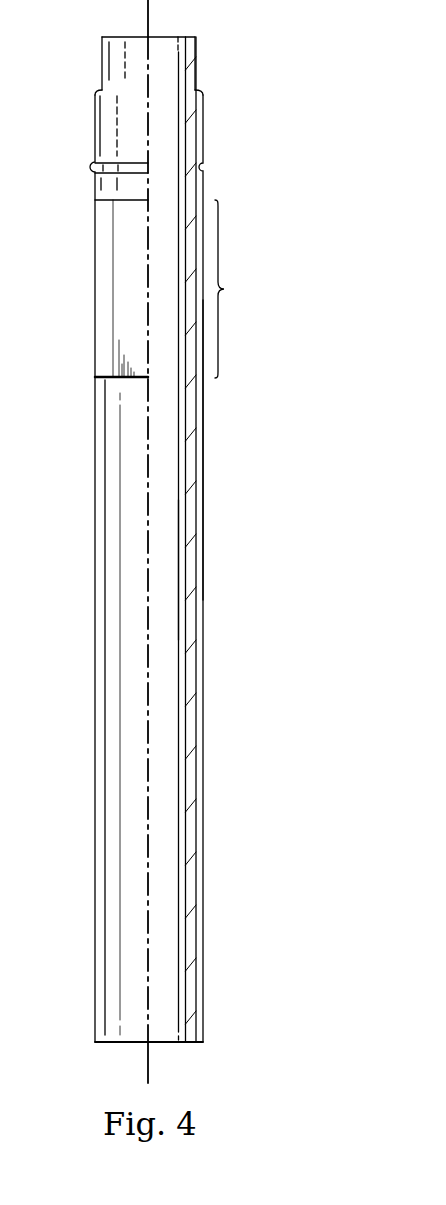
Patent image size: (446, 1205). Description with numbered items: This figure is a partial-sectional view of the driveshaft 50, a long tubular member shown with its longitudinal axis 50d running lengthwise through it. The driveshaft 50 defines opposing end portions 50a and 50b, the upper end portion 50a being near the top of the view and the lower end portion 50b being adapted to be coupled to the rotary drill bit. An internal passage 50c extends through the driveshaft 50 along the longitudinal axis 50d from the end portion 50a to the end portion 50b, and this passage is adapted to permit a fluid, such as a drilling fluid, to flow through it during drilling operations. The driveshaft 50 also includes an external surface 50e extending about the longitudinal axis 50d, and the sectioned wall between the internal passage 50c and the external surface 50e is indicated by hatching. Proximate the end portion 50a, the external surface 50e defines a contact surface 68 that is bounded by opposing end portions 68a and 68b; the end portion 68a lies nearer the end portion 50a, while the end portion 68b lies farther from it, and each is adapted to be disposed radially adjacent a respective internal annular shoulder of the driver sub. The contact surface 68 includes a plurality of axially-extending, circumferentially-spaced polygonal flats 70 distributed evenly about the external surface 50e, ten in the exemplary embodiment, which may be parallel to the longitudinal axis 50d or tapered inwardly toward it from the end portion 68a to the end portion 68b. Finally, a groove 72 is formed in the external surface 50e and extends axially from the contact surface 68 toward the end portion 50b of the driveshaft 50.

The driveshaft 50 is at (196, 50).
The end portion 50a is at (94, 125).
The end portion 50b is at (94, 1020).
The internal passage 50c is at (170, 570).
The longitudinal axis 50d is at (150, 1066).
The external surface 50e is at (204, 452).
The contact surface 68 is at (236, 289).
The end portion 68a is at (94, 205).
The end portion 68b is at (94, 372).
The polygonal flats 70 is at (128, 268).
The groove 72 is at (202, 715).